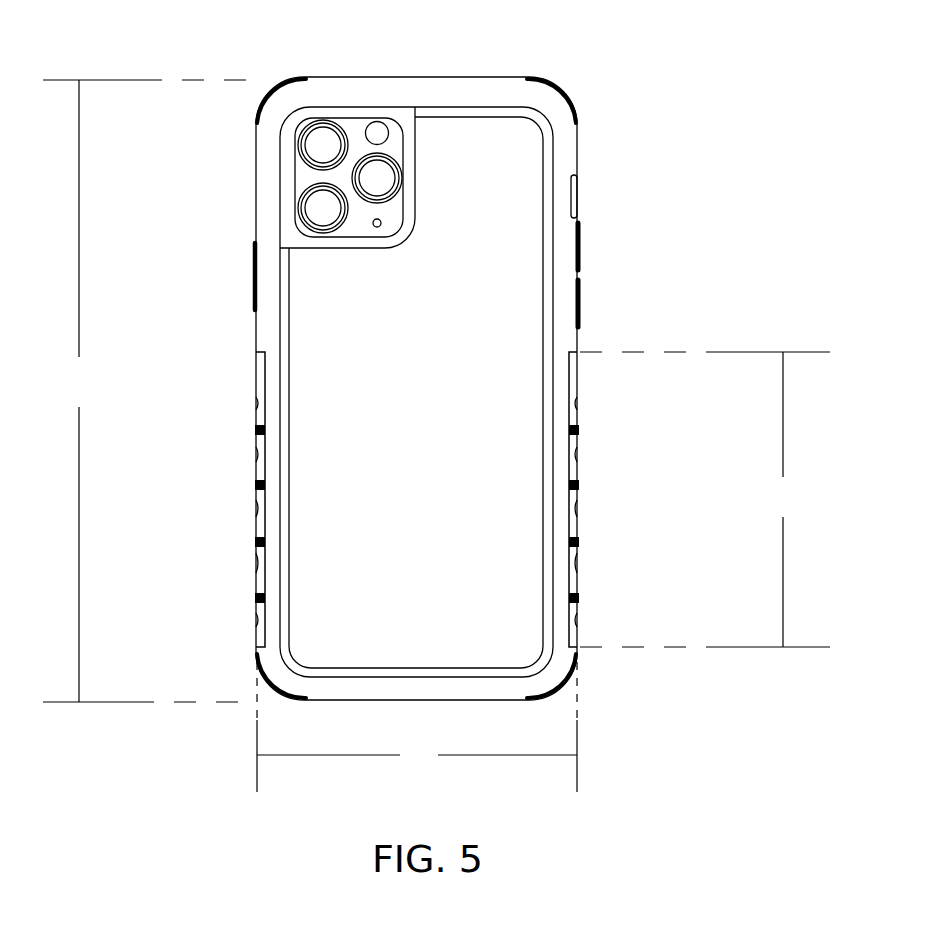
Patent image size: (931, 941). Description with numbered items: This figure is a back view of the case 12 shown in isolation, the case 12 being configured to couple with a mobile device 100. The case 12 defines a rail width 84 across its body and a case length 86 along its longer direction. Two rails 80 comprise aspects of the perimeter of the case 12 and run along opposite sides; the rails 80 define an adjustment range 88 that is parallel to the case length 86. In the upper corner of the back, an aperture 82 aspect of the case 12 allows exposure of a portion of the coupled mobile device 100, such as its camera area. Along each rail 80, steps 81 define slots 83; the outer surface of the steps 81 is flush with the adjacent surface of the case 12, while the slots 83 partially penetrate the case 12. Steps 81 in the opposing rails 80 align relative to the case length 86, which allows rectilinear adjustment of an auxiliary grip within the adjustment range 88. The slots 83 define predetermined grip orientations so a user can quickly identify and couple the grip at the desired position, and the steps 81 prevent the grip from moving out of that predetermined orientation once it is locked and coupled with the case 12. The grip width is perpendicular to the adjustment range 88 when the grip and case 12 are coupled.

The case 12 is at (588, 207).
The rails 80 is at (253, 467).
The steps 81 is at (255, 597).
The aperture 82 is at (294, 186).
The slots 83 is at (255, 520).
The rail width 84 is at (417, 727).
The case length 86 is at (149, 391).
The adjustment range 88 is at (705, 499).
The mobile device 100 is at (358, 140).